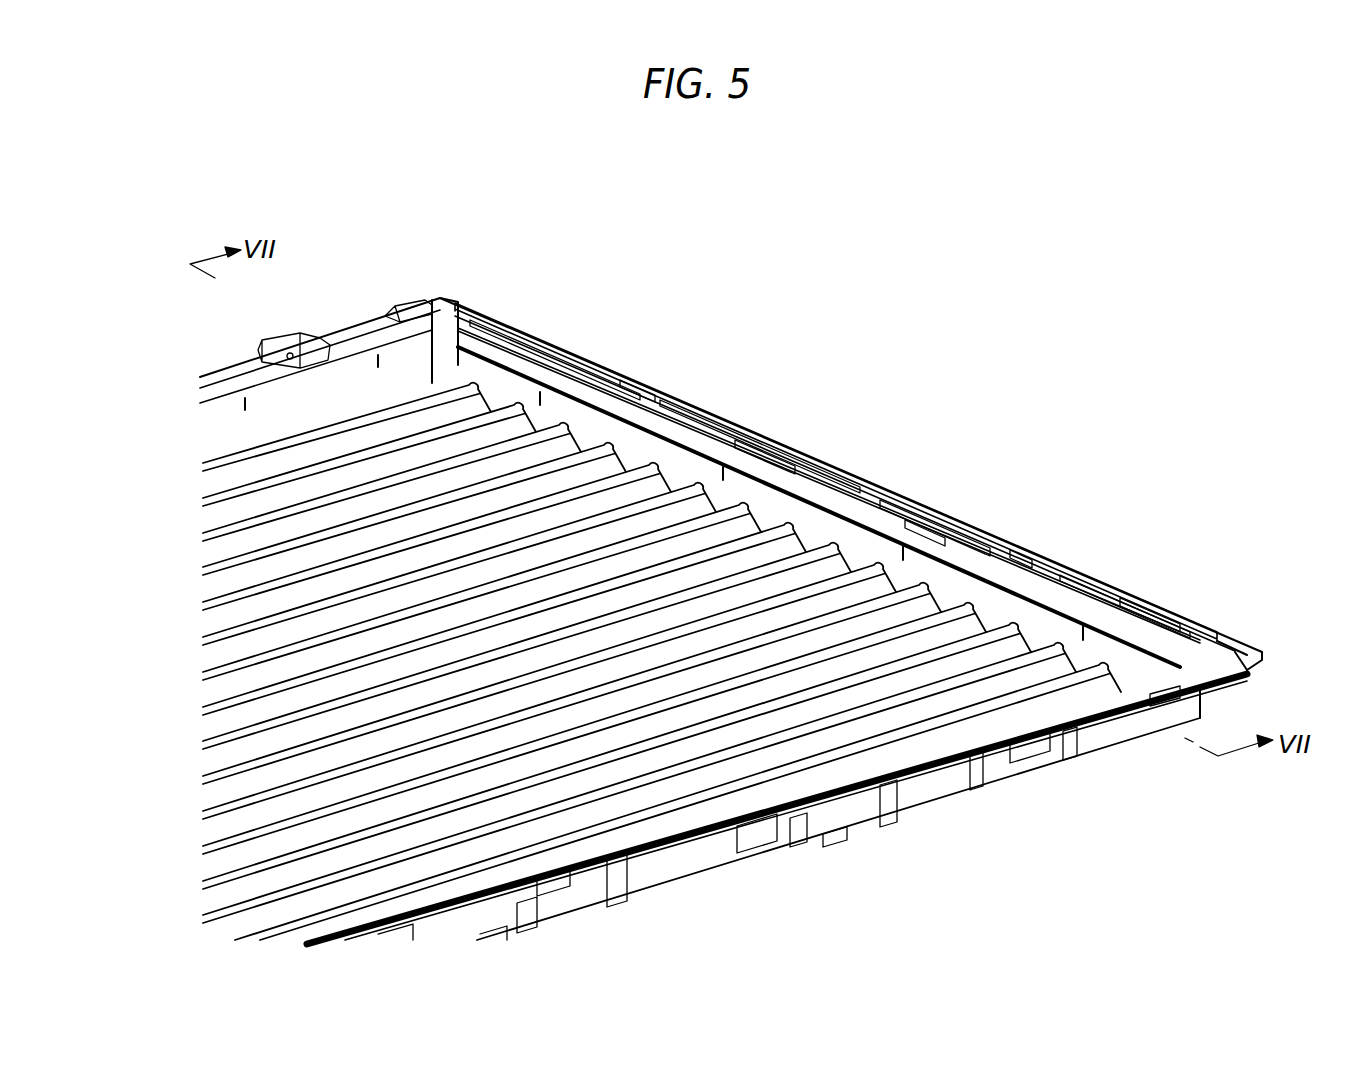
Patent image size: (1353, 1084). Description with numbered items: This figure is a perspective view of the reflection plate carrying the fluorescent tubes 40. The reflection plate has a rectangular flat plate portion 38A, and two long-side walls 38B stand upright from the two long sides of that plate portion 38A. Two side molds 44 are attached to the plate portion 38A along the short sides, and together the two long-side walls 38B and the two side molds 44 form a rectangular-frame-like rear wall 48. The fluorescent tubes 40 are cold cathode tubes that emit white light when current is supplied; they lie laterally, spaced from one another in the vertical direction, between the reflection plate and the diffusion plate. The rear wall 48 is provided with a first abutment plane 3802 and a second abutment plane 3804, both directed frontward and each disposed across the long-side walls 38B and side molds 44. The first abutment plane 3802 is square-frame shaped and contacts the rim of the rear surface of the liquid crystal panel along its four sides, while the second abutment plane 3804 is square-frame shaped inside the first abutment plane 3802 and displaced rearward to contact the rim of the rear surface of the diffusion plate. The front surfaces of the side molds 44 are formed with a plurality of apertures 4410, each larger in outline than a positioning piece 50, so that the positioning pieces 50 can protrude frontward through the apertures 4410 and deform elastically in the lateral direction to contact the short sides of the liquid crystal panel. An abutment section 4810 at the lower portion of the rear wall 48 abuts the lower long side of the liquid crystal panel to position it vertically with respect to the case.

The plate portion 38A is at (253, 787).
The long-side wall 38B is at (240, 430).
The fluorescent tube 40 is at (248, 869).
The side mold 44 is at (1040, 620).
The rear wall 48 is at (1046, 526).
The positioning piece 50 is at (733, 440).
The first abutment plane 3802 is at (573, 365).
The second abutment plane 3804 is at (342, 357).
The aperture 4410 is at (920, 520).
The abutment section 4810 is at (284, 340).